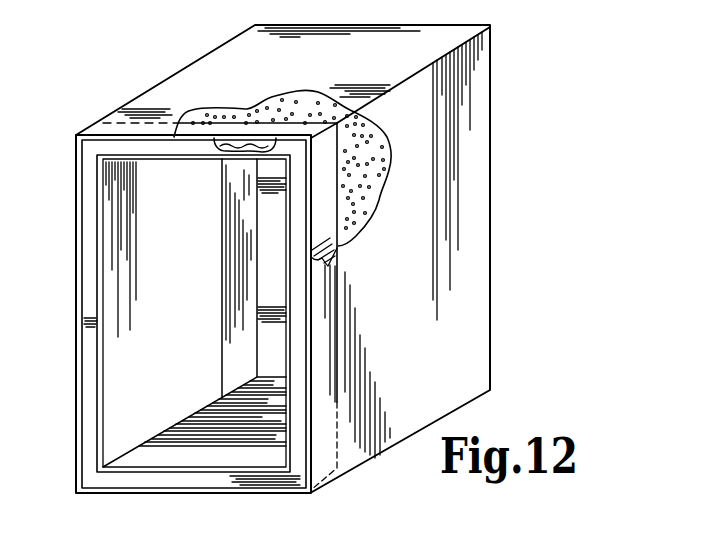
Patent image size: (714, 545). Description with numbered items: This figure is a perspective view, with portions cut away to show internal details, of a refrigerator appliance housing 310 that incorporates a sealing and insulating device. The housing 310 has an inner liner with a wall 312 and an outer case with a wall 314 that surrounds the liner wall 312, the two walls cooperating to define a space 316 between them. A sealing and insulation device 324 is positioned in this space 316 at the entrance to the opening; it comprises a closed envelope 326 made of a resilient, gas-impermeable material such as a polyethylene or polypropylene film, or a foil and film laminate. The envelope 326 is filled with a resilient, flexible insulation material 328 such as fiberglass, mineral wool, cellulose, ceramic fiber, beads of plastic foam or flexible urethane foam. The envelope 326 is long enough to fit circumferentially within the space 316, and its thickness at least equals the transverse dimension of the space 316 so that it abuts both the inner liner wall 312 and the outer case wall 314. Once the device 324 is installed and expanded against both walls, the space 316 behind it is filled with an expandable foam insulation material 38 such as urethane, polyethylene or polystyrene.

The refrigerator appliance housing 310 is at (507, 84).
The inner liner wall 312 is at (97, 282).
The outer case wall 314 is at (75, 349).
The space 316 is at (90, 395).
The sealing and insulation device 324 is at (320, 240).
The closed envelope 326 is at (212, 136).
The insulation material 328 is at (255, 148).
The expandable foam insulation material 38 is at (379, 192).